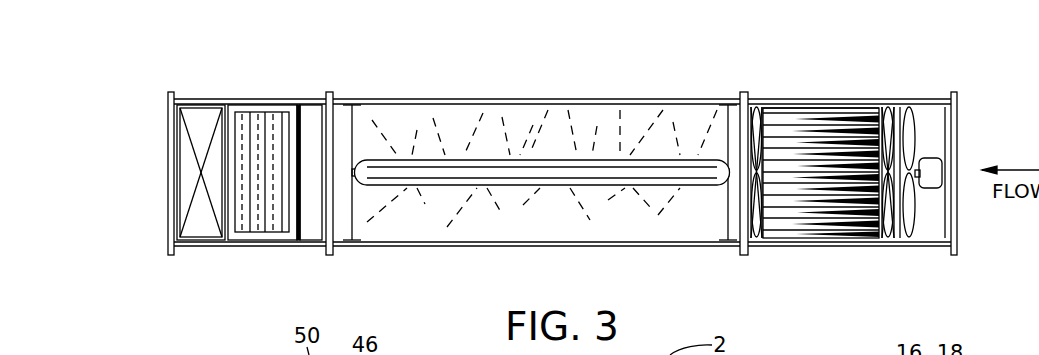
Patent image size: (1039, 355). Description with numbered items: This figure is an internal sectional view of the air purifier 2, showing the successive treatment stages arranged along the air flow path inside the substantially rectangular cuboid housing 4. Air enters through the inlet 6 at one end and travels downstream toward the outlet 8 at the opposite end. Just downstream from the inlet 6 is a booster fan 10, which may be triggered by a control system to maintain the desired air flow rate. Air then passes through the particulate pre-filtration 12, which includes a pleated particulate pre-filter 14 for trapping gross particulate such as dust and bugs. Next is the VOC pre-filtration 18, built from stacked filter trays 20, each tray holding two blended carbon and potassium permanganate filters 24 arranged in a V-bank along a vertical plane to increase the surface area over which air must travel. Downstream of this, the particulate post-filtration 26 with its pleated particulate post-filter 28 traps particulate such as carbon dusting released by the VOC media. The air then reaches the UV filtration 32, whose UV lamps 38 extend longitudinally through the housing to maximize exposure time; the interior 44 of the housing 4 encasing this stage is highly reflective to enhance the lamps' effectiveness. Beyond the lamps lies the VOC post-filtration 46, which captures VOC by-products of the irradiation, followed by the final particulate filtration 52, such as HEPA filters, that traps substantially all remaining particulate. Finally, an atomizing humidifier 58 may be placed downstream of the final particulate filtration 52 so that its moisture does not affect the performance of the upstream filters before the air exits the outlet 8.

The air purifier 2 is at (684, 272).
The housing 4 is at (420, 246).
The inlet 6 is at (957, 138).
The outlet 8 is at (173, 182).
The booster fan 10 is at (908, 127).
The particulate pre-filtration 12 is at (888, 242).
The left pleated particulate pre-filter 14 is at (893, 120).
The VOC pre-filtration 18 is at (840, 222).
The filter trays 20 is at (860, 224).
The blended carbon and KMnO4 filters 24 is at (821, 177).
The particulate post-filtration 26 is at (762, 243).
The left pleated particulate post-filter 28 is at (755, 115).
The UV filtration 32 is at (522, 125).
The UV lamps 38 is at (430, 168).
The interior of the housing 44 is at (557, 223).
The VOC post-filtration 46 is at (311, 148).
The final particulate filtration 52 is at (263, 135).
The atomizing humidifier 58 is at (197, 140).